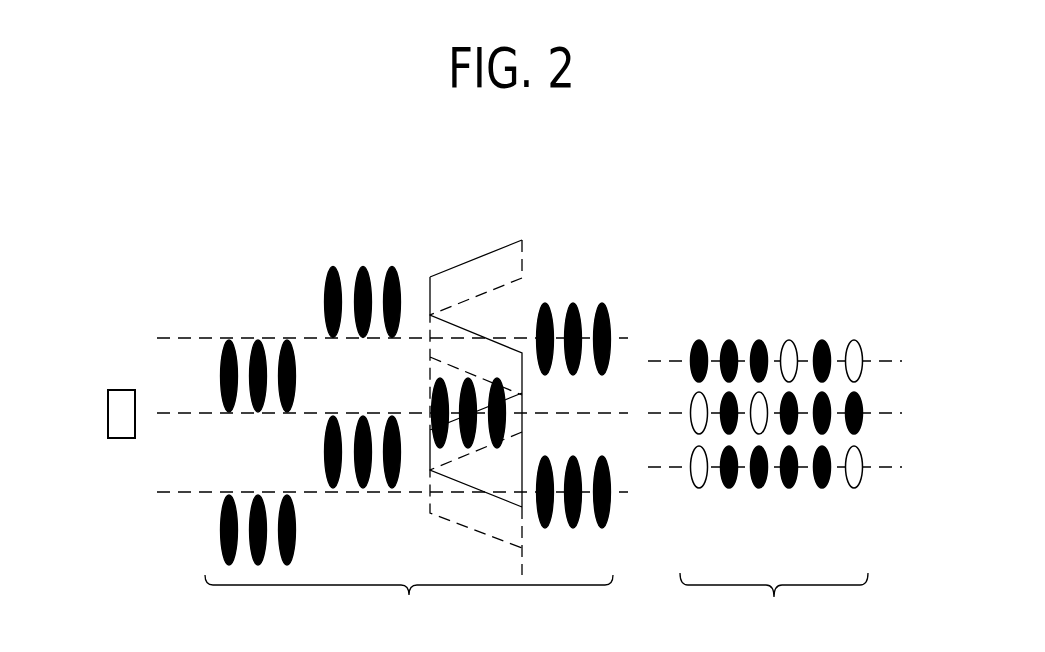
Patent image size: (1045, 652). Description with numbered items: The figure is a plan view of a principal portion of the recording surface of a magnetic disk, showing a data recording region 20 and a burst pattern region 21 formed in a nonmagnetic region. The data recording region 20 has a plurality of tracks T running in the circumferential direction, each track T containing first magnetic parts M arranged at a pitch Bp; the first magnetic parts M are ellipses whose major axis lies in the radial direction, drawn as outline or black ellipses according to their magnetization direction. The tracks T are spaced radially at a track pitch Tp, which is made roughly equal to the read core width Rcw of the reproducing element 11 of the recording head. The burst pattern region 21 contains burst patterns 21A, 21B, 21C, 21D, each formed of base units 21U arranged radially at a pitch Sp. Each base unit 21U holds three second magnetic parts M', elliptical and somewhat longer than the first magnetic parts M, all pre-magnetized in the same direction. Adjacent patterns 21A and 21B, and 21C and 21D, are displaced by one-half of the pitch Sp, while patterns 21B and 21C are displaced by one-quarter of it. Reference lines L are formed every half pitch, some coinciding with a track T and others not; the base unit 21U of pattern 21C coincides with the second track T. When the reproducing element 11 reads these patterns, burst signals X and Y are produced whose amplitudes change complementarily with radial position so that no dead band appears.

The reproducing element 11 is at (118, 390).
The data recording region 20 is at (775, 488).
The burst pattern region 21 is at (392, 486).
The burst pattern 21A is at (297, 253).
The burst pattern 21B is at (402, 253).
The burst pattern 21C is at (507, 253).
The burst pattern 21D is at (612, 253).
The base unit 21U is at (606, 455).
The reference line L is at (215, 412).
The first magnetic part M is at (806, 313).
The second magnetic part M' is at (629, 589).
The track T is at (882, 413).
The burst signal X is at (460, 483).
The burst signal Y is at (485, 535).
The pitch Sp is at (186, 492).
The read core width Rcw is at (95, 390).
The pitch Bp is at (730, 334).
The track pitch Tp is at (890, 413).